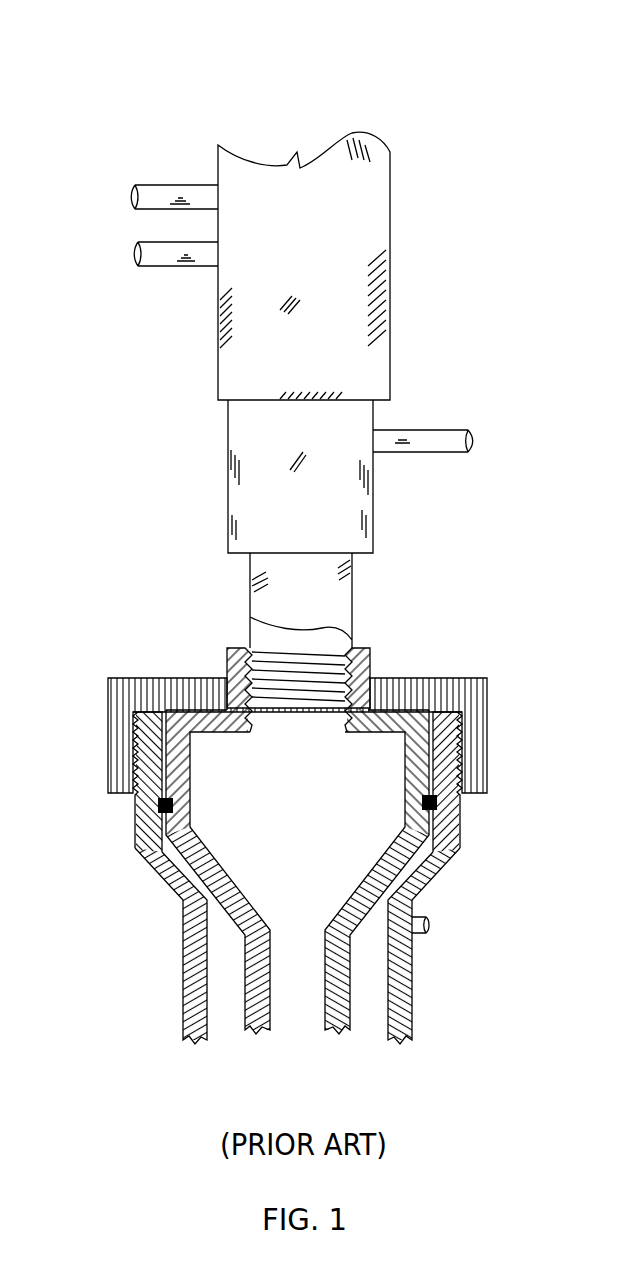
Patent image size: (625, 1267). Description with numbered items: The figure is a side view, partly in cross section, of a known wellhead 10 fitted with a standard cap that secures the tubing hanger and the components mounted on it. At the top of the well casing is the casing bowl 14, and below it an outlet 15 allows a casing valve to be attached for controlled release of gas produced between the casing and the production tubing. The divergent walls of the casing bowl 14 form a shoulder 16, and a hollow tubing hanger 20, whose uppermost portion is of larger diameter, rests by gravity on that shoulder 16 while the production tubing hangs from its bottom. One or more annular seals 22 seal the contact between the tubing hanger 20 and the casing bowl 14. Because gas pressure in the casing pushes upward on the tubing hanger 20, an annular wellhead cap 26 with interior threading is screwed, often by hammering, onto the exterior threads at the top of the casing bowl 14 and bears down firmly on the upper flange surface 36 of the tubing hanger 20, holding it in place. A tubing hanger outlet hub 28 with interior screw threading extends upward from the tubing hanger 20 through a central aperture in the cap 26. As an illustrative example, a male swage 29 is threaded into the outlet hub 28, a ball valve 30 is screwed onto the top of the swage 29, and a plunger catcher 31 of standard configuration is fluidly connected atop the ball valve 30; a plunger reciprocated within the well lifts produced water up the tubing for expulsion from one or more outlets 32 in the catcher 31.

The wellhead 10 is at (465, 81).
The casing bowl 14 is at (135, 830).
The outlet 15 is at (430, 925).
The shoulder 16 is at (457, 858).
The tubing hanger 20 is at (200, 895).
The annular seals 22 is at (437, 803).
The wellhead cap 26 is at (466, 690).
The tubing hanger outlet hub 28 is at (230, 668).
The swage 29 is at (340, 615).
The ball valve 30 is at (360, 520).
The plunger catcher 31 is at (388, 333).
The outlets 32 is at (157, 258).
The upper flange surface 36 is at (168, 710).